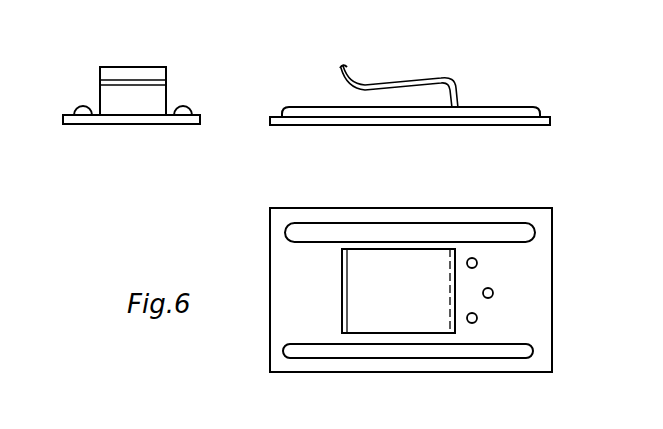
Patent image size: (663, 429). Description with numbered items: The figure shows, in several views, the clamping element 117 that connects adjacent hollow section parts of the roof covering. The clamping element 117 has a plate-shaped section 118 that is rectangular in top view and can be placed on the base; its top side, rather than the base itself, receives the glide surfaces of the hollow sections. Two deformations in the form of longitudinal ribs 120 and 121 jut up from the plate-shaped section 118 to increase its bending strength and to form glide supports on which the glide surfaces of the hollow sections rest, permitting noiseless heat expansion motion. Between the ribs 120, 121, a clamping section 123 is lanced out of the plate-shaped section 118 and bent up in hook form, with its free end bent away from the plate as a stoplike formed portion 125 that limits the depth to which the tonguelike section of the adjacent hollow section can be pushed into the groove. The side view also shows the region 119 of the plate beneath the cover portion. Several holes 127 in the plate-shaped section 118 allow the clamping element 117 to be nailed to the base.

The clamping element 117 is at (107, 126).
The plate-shaped section 118 is at (510, 110).
The plate underside 119 is at (440, 127).
The longitudinal rib 120 is at (186, 109).
The longitudinal rib 121 is at (77, 110).
The clamping section 123 is at (97, 71).
The formed portion 125 is at (133, 67).
The holes 127 is at (478, 318).